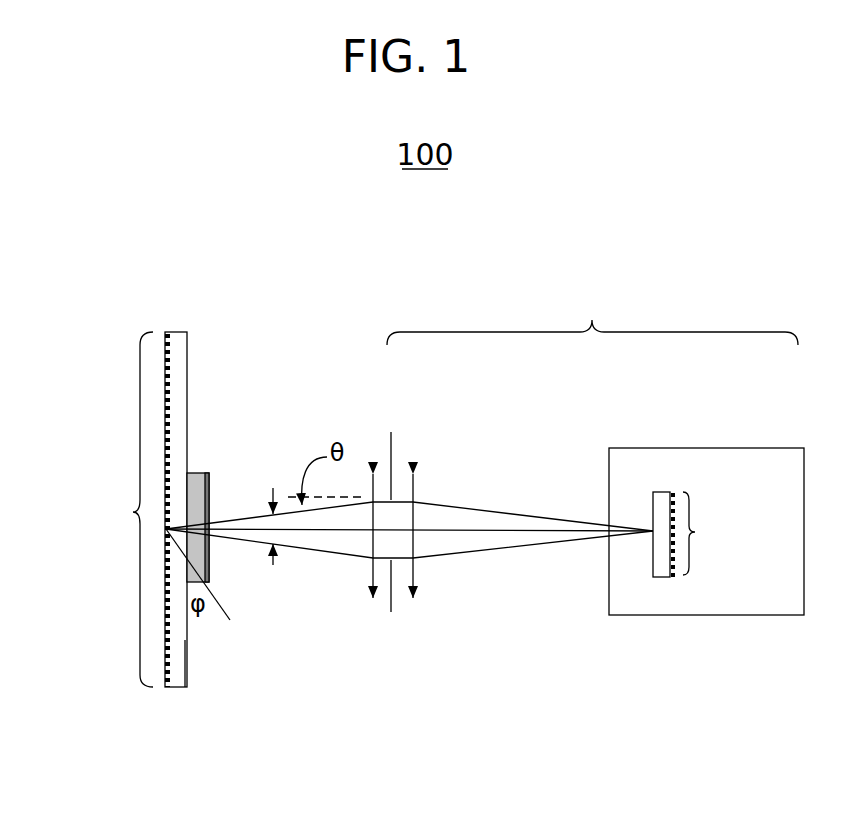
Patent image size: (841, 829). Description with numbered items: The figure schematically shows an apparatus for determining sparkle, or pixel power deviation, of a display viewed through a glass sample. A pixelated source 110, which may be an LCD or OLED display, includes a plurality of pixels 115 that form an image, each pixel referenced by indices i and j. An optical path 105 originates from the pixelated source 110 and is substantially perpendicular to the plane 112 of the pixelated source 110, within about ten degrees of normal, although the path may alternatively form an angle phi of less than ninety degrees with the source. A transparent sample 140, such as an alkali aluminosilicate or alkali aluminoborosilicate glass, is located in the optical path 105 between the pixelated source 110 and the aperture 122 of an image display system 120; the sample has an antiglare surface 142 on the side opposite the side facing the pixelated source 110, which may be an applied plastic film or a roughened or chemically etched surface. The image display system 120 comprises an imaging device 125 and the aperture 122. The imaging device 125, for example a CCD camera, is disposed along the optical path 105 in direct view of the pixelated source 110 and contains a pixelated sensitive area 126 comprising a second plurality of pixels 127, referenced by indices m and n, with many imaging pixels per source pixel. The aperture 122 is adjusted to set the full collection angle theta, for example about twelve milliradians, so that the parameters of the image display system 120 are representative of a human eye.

The pixelated source 110 is at (166, 491).
The plane 112 is at (188, 657).
The plurality of pixels 115 is at (109, 509).
The transparent sample 140 is at (193, 485).
The antiglare surface 142 is at (207, 483).
The optical path 105 is at (337, 535).
The image display system 120 is at (585, 442).
The aperture 122 is at (397, 451).
The imaging device 125 is at (706, 506).
The image sensor 126 is at (650, 563).
The second plurality of pixels 127 is at (719, 533).